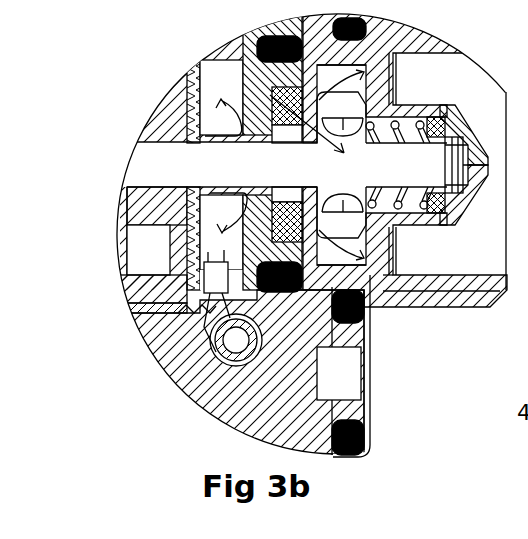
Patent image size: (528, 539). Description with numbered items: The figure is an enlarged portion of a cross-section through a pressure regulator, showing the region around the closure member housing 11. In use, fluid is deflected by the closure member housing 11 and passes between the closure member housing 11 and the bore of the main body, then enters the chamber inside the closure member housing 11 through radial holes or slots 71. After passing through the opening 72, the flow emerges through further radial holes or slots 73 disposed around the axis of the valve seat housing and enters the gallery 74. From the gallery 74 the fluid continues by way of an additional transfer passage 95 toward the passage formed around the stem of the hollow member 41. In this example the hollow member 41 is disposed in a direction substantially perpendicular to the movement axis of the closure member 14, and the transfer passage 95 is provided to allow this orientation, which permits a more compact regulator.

The closure member housing 11 is at (501, 165).
The closure member 14 is at (232, 56).
The hollow member 41 is at (182, 382).
The radial holes or slots 71 is at (320, 216).
The opening 72 is at (297, 193).
The radial holes or slots 73 is at (215, 247).
The gallery 74 is at (203, 309).
The transfer passage 95 is at (213, 283).